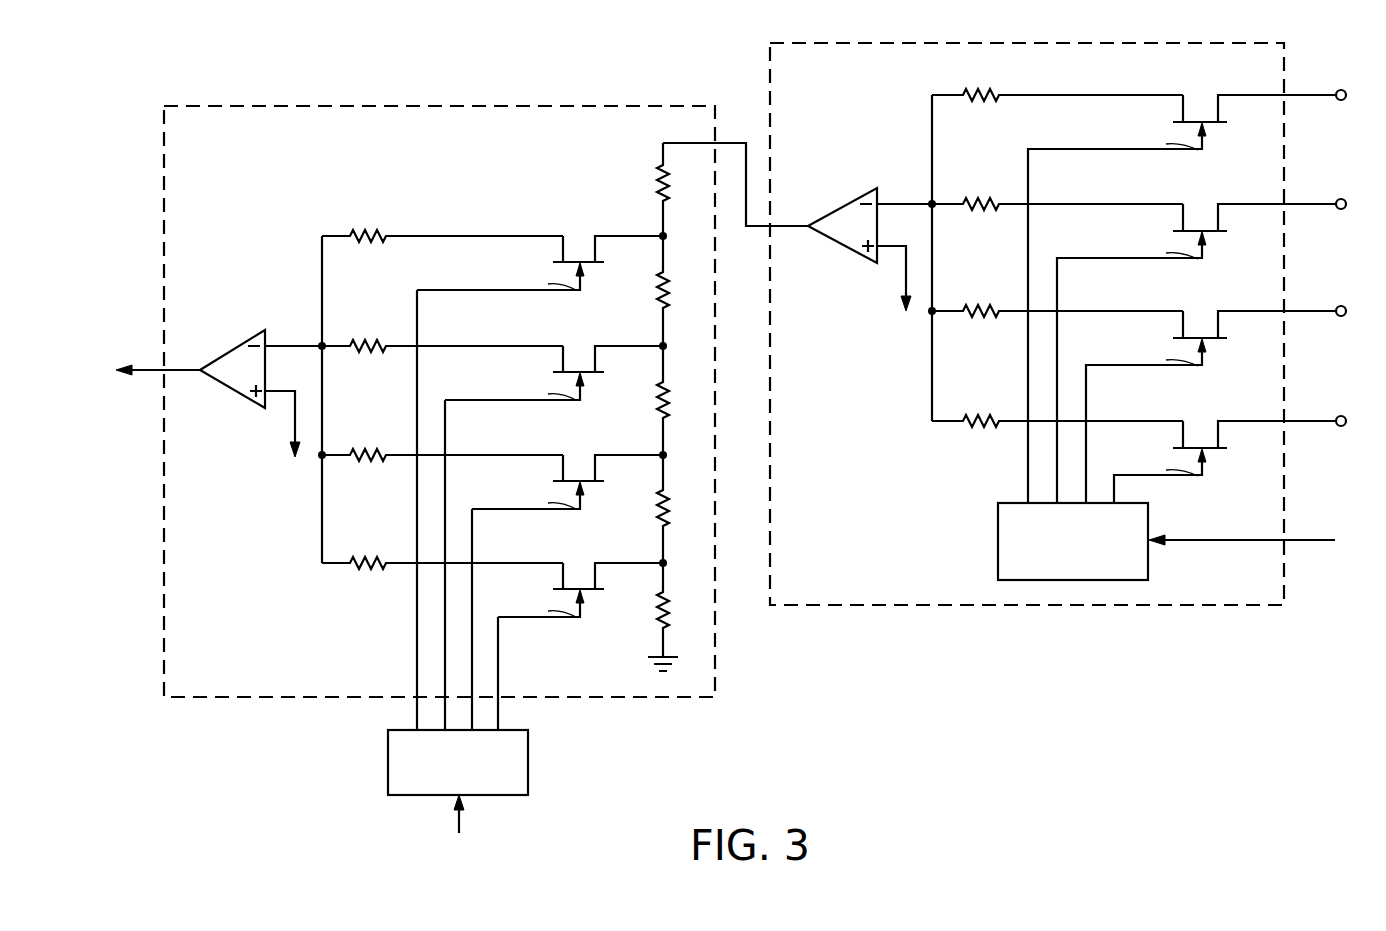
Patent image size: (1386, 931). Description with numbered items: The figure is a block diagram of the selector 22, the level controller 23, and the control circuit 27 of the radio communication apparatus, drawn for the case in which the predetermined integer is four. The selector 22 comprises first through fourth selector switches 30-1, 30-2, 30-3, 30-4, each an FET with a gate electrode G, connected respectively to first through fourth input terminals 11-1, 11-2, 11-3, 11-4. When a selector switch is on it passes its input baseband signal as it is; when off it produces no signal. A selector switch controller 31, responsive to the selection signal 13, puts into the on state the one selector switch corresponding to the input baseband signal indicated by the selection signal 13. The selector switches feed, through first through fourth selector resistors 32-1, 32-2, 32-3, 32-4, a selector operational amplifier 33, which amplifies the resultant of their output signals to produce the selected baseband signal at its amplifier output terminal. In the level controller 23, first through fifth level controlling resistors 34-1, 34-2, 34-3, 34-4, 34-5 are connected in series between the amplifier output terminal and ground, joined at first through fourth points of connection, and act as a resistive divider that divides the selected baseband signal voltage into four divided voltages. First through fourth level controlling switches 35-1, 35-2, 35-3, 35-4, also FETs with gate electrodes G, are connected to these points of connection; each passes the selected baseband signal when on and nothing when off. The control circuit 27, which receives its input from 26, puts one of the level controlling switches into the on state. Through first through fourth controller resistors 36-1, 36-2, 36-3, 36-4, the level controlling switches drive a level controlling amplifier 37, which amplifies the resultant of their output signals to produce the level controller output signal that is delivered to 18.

The level controller 23 is at (483, 105).
The selector 22 is at (768, 80).
The level controlling amplifier 37 is at (238, 350).
The output destination (to 18) 18 is at (138, 367).
The first controller resistor 36-1 is at (369, 243).
The second controller resistor 36-2 is at (369, 353).
The third controller resistor 36-3 is at (369, 462).
The fourth controller resistor 36-4 is at (369, 570).
The first level controlling switch 35-1 is at (578, 240).
The second level controlling switch 35-2 is at (578, 352).
The third level controlling switch 35-3 is at (578, 461).
The fourth level controlling switch 35-4 is at (578, 570).
The first level controlling resistor 34-1 is at (658, 196).
The second level controlling resistor 34-2 is at (658, 302).
The third level controlling resistor 34-3 is at (658, 412).
The fourth level controlling resistor 34-4 is at (658, 521).
The fifth level controlling resistor 34-5 is at (658, 631).
The control circuit 27 is at (528, 760).
The input source (from 26) 26 is at (459, 827).
The selector operational amplifier 33 is at (850, 205).
The first selector resistor 32-1 is at (982, 103).
The second selector resistor 32-2 is at (982, 212).
The third selector resistor 32-3 is at (982, 319).
The fourth selector resistor 32-4 is at (982, 429).
The first selector switch 30-1 is at (1196, 95).
The second selector switch 30-2 is at (1196, 204).
The third selector switch 30-3 is at (1196, 311).
The fourth selector switch 30-4 is at (1196, 421).
The first input terminal 11-1 is at (1362, 70).
The second input terminal 11-2 is at (1362, 179).
The third input terminal 11-3 is at (1362, 286).
The fourth input terminal 11-4 is at (1362, 396).
The selector switch controller 31 is at (998, 546).
The selection signal 13 is at (1336, 538).